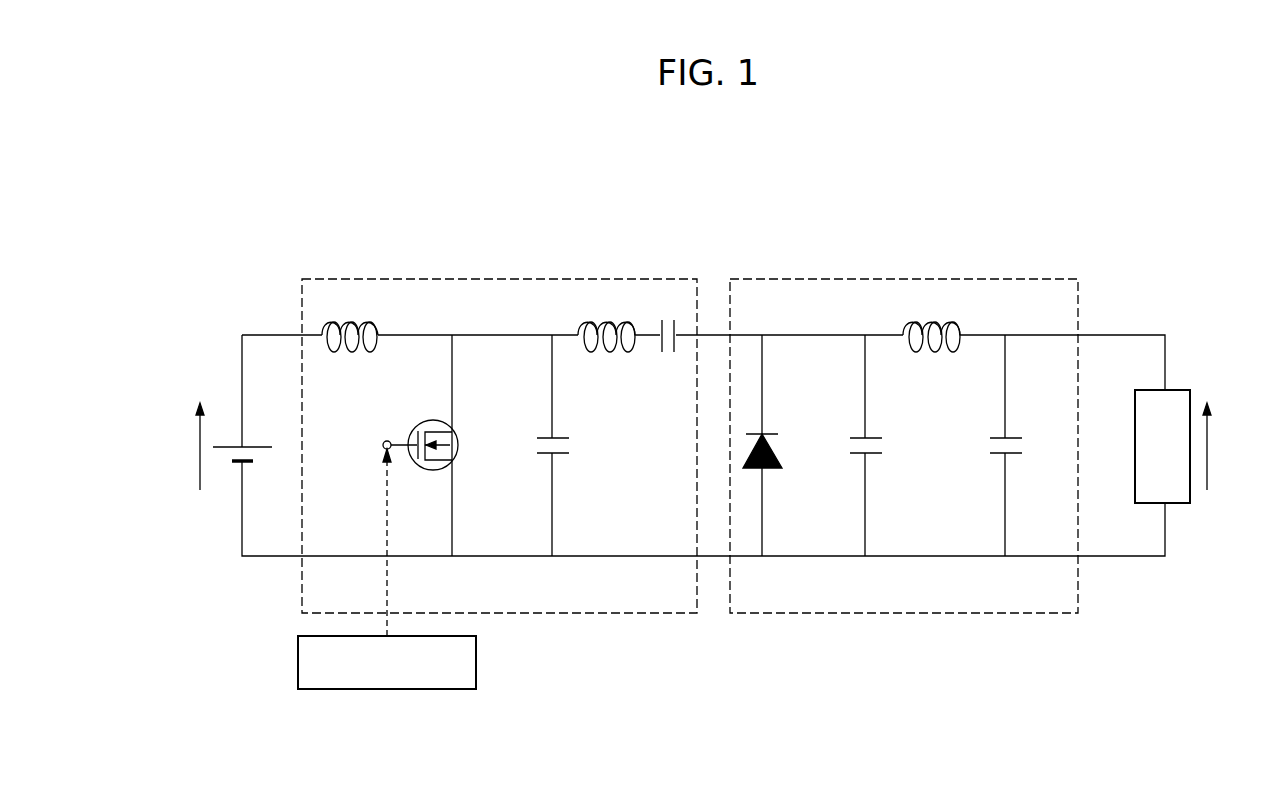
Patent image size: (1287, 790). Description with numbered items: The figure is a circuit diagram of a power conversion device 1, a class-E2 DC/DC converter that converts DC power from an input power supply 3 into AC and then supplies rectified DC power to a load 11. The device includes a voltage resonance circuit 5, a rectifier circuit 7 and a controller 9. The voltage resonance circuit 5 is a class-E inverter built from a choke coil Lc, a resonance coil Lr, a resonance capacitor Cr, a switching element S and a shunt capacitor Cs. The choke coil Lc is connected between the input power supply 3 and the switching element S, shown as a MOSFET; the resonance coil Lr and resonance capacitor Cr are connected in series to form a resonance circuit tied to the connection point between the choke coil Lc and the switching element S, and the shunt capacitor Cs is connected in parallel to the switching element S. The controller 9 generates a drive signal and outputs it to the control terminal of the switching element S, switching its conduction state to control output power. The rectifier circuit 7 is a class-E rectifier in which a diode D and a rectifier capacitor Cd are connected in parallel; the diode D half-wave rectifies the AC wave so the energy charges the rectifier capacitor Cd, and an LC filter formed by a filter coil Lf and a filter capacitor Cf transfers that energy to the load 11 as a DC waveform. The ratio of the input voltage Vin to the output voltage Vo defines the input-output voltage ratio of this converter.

The power conversion device 1 is at (722, 233).
The input power supply 3 is at (240, 465).
The voltage resonance circuit 5 is at (522, 278).
The rectifier circuit 7 is at (903, 278).
The controller 9 is at (478, 663).
The load 11 is at (1188, 389).
The switching element S is at (422, 424).
The choke coil Lc is at (350, 324).
The shunt capacitor Cs is at (557, 445).
The resonance coil Lr is at (606, 324).
The resonance capacitor Cr is at (665, 324).
The diode D is at (771, 445).
The rectifier capacitor Cd is at (871, 445).
The filter coil Lf is at (931, 324).
The filter capacitor Cf is at (1010, 445).
The input voltage Vin is at (181, 446).
The output voltage Vo is at (1220, 446).